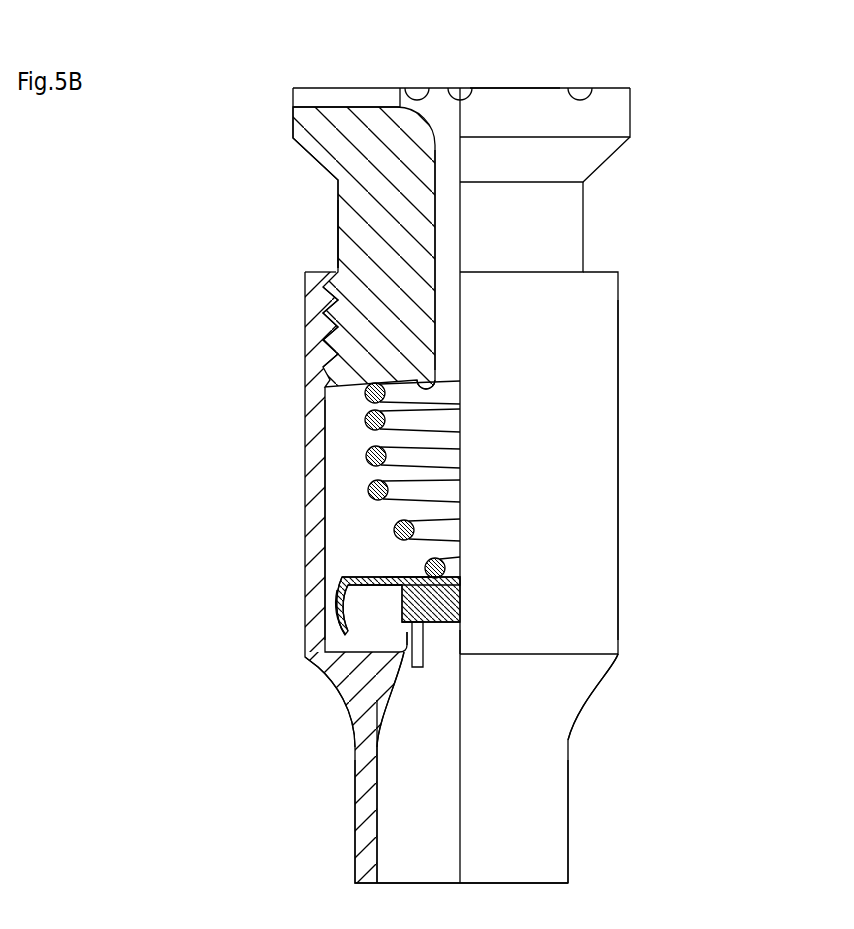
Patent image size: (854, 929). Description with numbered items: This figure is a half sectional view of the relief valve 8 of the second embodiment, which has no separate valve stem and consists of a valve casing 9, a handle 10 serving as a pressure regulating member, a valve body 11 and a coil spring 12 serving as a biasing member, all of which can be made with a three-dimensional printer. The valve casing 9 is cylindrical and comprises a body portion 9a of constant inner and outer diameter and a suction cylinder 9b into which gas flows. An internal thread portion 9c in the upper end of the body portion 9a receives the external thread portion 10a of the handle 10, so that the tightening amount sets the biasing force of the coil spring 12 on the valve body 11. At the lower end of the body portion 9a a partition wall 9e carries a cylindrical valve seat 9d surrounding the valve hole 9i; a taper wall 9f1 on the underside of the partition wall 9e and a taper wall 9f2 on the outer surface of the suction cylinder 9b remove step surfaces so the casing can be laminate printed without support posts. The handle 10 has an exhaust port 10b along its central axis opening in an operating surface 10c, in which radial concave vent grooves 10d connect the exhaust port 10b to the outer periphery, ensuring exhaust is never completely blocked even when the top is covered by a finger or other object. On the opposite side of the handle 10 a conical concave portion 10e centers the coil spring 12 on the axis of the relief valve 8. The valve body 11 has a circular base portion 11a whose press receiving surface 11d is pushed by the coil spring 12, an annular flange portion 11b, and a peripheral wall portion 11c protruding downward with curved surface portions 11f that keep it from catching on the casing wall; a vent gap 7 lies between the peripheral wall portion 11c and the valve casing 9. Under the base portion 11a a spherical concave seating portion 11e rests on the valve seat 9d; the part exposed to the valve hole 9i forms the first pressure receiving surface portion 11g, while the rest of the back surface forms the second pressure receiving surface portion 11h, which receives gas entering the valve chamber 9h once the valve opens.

The vent gap 7 is at (332, 606).
The relief valve 8 is at (697, 133).
The valve casing 9 is at (618, 305).
The body portion 9a is at (618, 362).
The suction cylinder 9b is at (567, 808).
The internal thread portion 9c is at (343, 328).
The valve seat 9d is at (462, 607).
The partition wall 9e is at (423, 668).
The taper wall 9f1 is at (393, 690).
The taper wall 9f2 is at (345, 705).
The valve chamber 9h is at (352, 427).
The valve hole 9i is at (466, 652).
The handle 10 is at (296, 126).
The external thread portion 10a is at (304, 293).
The exhaust port 10b is at (452, 232).
The operating surface 10c is at (532, 88).
The vent grooves 10d is at (338, 97).
The conical concave portion 10e is at (462, 383).
The valve body 11 is at (338, 577).
The base portion 11a is at (461, 590).
The flange portion 11b is at (384, 576).
The peripheral wall portion 11c is at (328, 588).
The press receiving surface 11d is at (441, 576).
The seating portion 11e is at (428, 627).
The curved surface portions 11f is at (338, 577).
The first pressure receiving surface portion 11g is at (410, 618).
The second pressure receiving surface portion 11h is at (385, 587).
The coil spring 12 is at (442, 423).